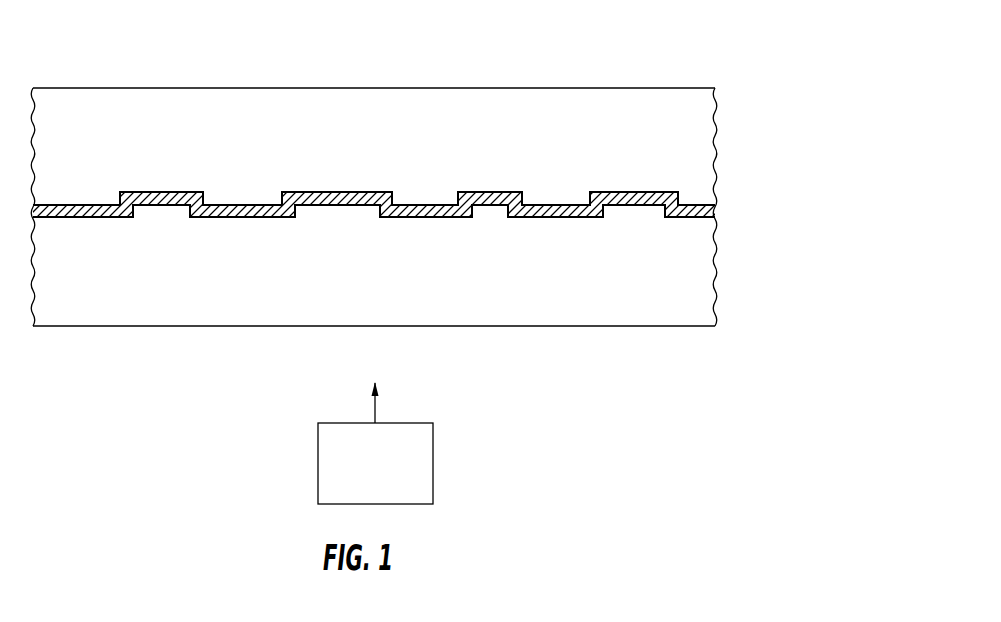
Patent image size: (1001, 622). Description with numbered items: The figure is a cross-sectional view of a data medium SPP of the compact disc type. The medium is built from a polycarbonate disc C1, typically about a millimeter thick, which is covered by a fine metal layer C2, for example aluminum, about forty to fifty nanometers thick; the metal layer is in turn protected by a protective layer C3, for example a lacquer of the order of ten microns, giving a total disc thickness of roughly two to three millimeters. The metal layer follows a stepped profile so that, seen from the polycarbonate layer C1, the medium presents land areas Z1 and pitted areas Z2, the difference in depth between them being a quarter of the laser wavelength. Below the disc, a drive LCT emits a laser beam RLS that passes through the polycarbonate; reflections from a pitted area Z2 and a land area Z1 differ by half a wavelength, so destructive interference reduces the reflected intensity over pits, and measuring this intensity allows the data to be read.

The data medium SPP is at (618, 74).
The protective layer C3 is at (712, 128).
The fine metal layer C2 is at (715, 210).
The polycarbonate disc C1 is at (707, 290).
The land area Z1 is at (245, 220).
The pitted area Z2 is at (157, 208).
The drive LCT is at (375, 463).
The laser beam RLS is at (375, 386).